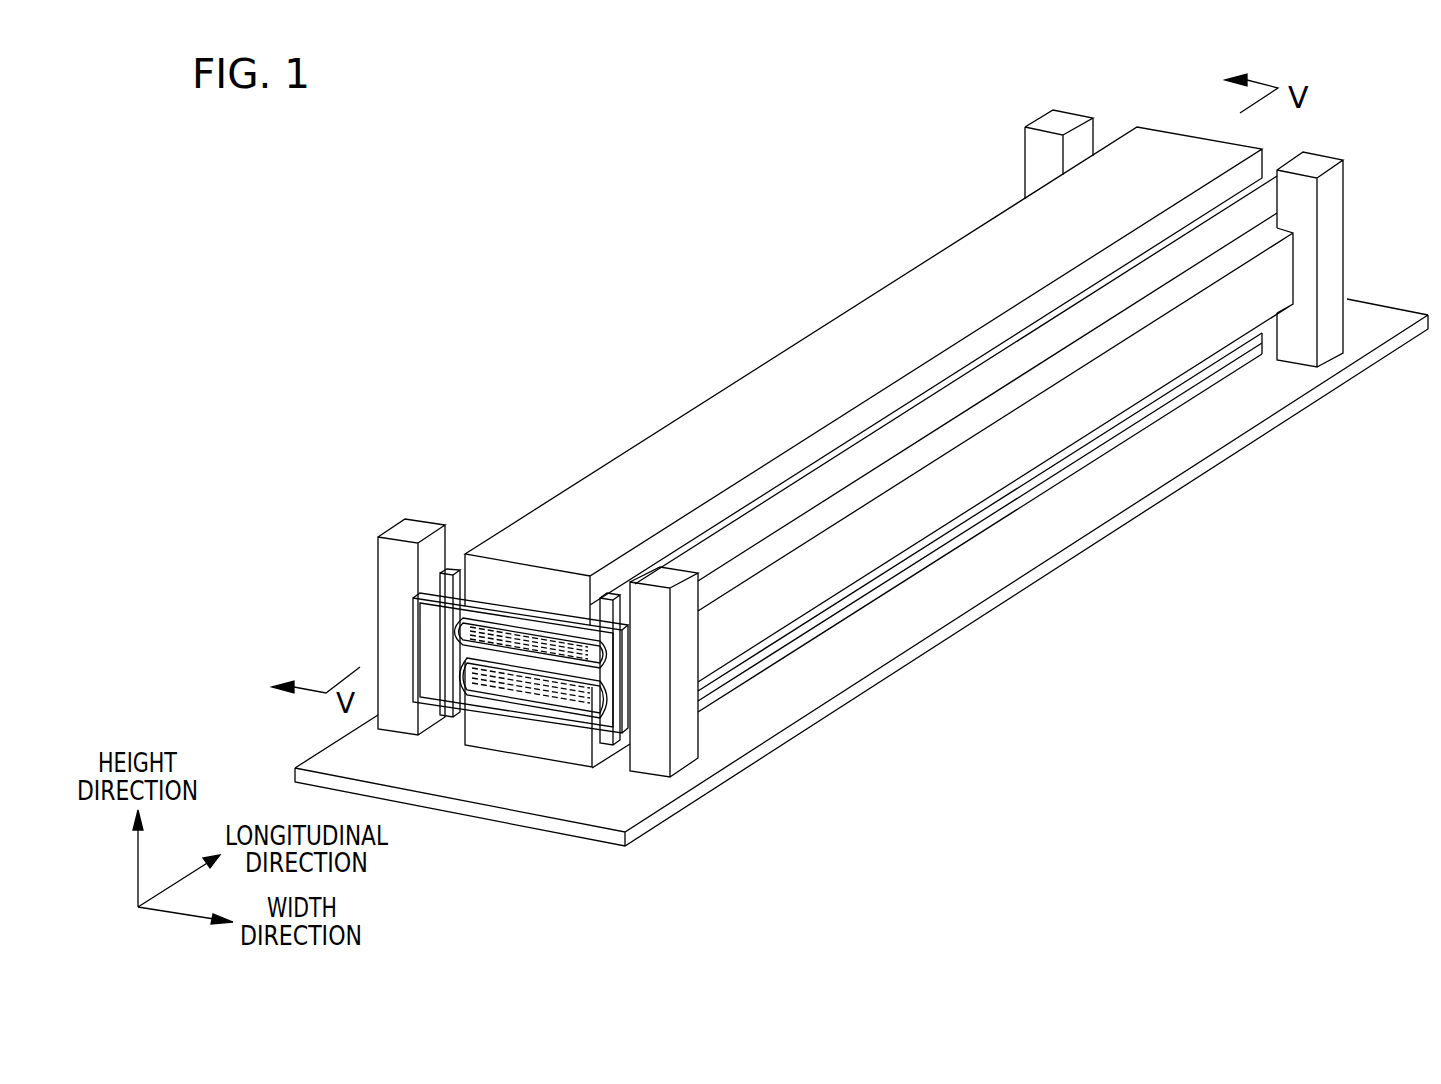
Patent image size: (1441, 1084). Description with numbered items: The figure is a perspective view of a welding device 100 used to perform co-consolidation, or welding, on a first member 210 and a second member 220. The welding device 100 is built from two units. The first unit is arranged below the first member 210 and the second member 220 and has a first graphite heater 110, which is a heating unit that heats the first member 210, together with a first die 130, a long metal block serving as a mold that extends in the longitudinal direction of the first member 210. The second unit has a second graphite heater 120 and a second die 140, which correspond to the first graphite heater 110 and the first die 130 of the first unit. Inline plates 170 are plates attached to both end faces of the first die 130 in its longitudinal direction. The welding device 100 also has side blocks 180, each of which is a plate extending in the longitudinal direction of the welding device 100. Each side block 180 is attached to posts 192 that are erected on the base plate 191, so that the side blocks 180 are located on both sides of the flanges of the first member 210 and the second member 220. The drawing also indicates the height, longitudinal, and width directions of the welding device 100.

The welding device 100 is at (868, 451).
The first graphite heater 110 is at (577, 697).
The second graphite heater 120 is at (560, 645).
The first die 130 is at (480, 730).
The second die 140 is at (520, 545).
The inline plate 170 is at (540, 722).
The side block 180 is at (430, 622).
The base plate 191 is at (1025, 588).
The post 192 is at (1068, 110).
The first member 210 is at (645, 690).
The second member 220 is at (620, 662).